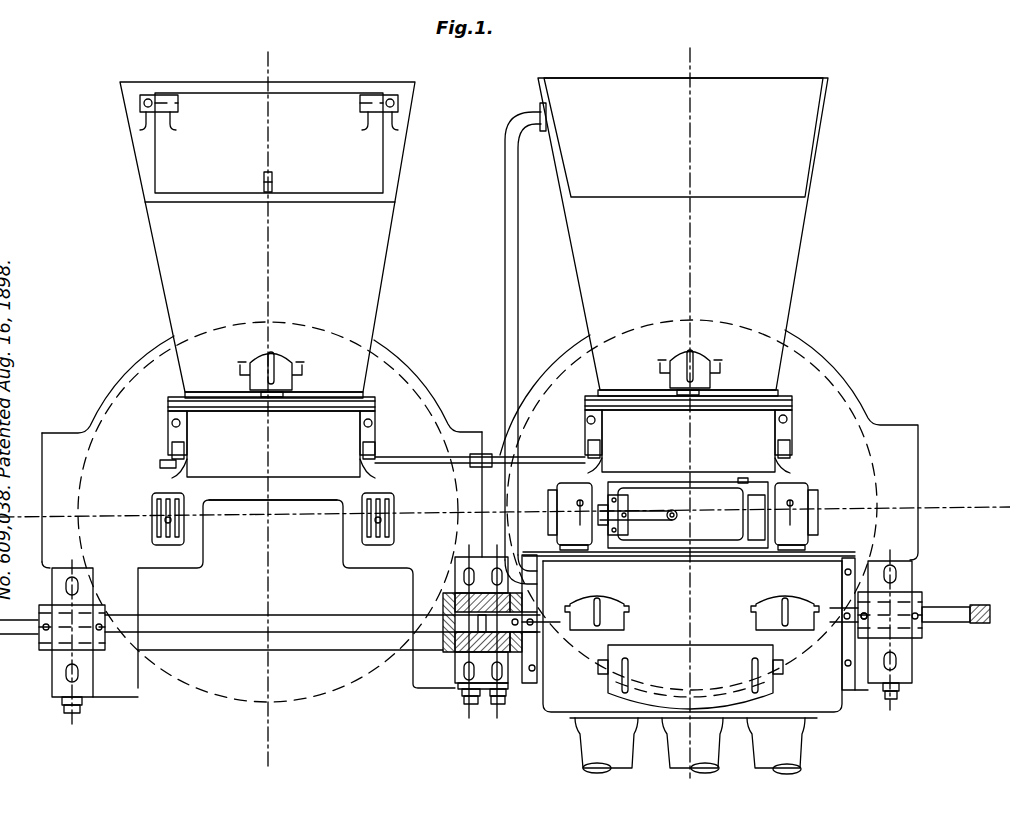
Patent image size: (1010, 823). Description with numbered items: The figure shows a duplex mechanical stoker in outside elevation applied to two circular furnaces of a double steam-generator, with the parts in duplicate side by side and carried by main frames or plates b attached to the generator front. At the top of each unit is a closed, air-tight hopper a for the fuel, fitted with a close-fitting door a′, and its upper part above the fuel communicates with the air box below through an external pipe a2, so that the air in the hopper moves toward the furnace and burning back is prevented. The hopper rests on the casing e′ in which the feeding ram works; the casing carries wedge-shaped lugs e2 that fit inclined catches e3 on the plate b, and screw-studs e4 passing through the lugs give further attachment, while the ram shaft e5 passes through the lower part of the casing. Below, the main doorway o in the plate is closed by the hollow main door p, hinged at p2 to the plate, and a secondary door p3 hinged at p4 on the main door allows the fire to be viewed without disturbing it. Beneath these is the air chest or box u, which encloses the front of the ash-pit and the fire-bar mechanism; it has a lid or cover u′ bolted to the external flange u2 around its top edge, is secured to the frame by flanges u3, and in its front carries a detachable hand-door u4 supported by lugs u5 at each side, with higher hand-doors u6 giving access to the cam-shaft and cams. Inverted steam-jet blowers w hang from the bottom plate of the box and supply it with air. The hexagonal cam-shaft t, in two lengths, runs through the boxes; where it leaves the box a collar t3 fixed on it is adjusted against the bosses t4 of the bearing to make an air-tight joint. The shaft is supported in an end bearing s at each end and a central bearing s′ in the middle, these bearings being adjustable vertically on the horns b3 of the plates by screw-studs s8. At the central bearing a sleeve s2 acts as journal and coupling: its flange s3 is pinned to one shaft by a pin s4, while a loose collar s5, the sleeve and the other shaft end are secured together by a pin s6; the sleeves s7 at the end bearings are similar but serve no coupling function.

The hopper a is at (474, 238).
The door a′ is at (481, 137).
The pipe a2 is at (505, 197).
The main frame or plate b is at (928, 492).
The horns b3 is at (134, 692).
The casing e′ is at (140, 510).
The wedge-shaped lugs e2 is at (170, 440).
The inclined catches e3 is at (172, 452).
The screw-studs e4 is at (174, 421).
The shaft e5 is at (166, 468).
The main doorway o is at (273, 514).
The main door p is at (652, 492).
The hinge p2 is at (744, 481).
The secondary door p3 is at (658, 515).
The hinge p4 is at (722, 486).
The end bearing s is at (62, 664).
The central bearing s′ is at (458, 572).
The sleeve s2 is at (448, 640).
The flange s3 is at (452, 612).
The pin s4 is at (456, 592).
The loose collar s5 is at (536, 652).
The pin s6 is at (534, 622).
The sleeves s7 is at (68, 606).
The screw-studs s8 is at (68, 706).
The cam-shaft t is at (302, 618).
The collar t3 is at (540, 636).
The bosses t4 is at (538, 612).
The air chest or box u is at (692, 639).
The lid or cover u′ is at (546, 556).
The external flange u2 is at (574, 558).
The flanges u3 is at (532, 672).
The detachable hand-door u4 is at (690, 677).
The lugs u5 is at (600, 670).
The hand-doors u6 is at (614, 616).
The inverted steam-jet blowers w is at (690, 746).